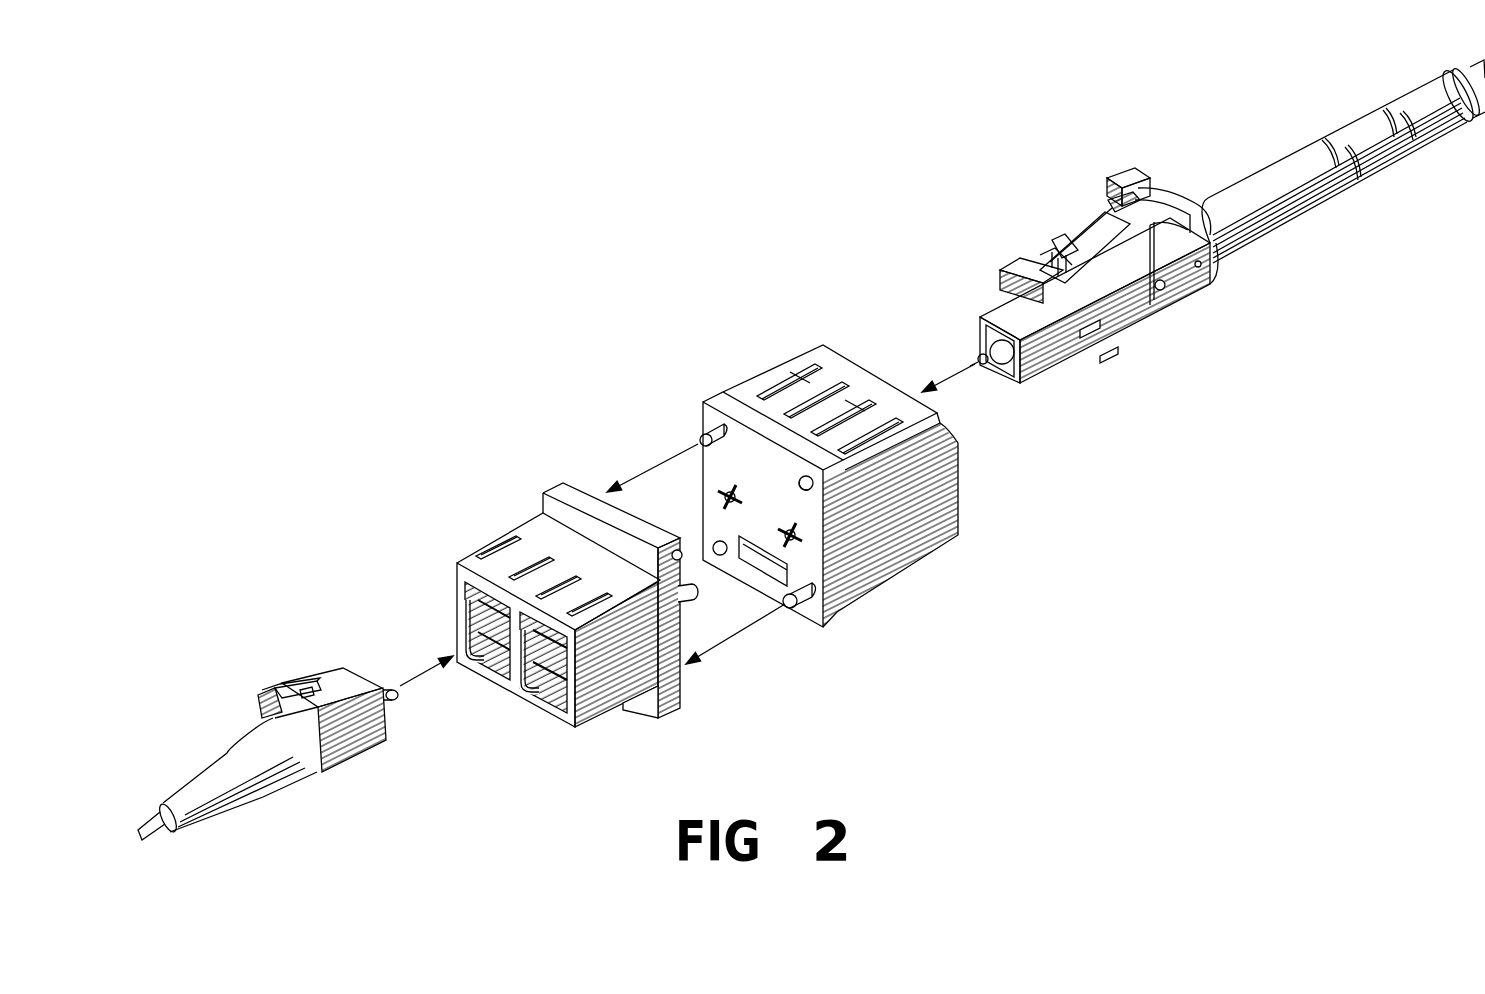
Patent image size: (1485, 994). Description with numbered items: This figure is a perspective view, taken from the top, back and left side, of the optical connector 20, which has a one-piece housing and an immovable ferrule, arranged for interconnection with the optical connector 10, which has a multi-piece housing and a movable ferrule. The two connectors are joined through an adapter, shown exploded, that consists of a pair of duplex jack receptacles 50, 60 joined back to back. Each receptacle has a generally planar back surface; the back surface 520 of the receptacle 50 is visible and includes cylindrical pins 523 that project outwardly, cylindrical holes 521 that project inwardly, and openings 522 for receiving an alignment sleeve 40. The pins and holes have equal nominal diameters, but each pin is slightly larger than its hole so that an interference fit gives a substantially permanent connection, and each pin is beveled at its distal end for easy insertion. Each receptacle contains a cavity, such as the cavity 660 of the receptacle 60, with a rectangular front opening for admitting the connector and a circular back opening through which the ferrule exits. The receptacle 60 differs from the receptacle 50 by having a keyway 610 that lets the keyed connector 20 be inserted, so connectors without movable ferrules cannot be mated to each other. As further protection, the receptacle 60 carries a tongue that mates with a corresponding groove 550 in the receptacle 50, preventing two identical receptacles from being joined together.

The optical connector 10 is at (1210, 307).
The optical connector 20 is at (303, 800).
The alignment sleeve 40 is at (694, 600).
The duplex jack receptacle 50 is at (797, 513).
The duplex jack receptacle 60 is at (554, 629).
The back surface 520 is at (812, 613).
The cylindrical hole 521 is at (798, 482).
The opening 522 is at (782, 526).
The cylindrical pin 523 is at (698, 440).
The groove 550 is at (763, 563).
The keyway 610 is at (523, 683).
The cavity 660 is at (463, 627).